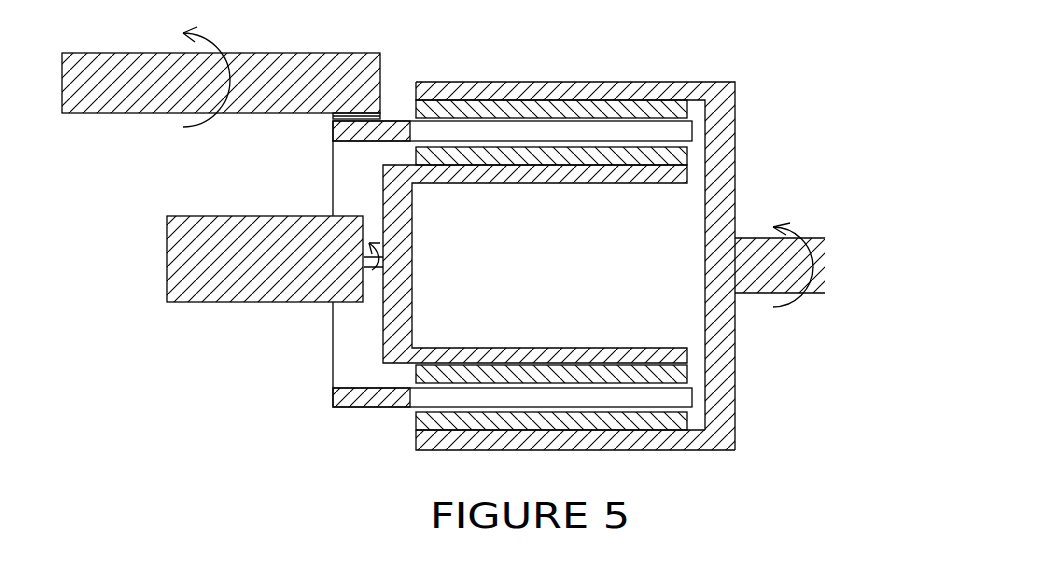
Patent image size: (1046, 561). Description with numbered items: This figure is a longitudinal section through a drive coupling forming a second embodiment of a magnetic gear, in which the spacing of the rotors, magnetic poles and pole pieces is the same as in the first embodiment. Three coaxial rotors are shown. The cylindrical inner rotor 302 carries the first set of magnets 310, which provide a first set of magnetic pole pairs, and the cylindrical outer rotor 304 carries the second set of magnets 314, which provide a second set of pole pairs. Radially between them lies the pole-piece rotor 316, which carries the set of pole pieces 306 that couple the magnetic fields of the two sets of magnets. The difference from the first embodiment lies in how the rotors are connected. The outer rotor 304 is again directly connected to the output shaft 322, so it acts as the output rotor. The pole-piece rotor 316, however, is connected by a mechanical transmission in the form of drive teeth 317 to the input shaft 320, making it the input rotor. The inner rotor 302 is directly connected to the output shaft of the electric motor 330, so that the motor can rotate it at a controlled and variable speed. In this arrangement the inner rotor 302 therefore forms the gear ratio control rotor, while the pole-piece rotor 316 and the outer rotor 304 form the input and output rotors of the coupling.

The inner rotor 302 is at (533, 177).
The outer rotor 304 is at (460, 87).
The pole pieces 306 is at (418, 400).
The first set of magnets 310 is at (642, 155).
The second set of magnets 314 is at (572, 103).
The pole-piece rotor 316 is at (367, 398).
The drive teeth 317 is at (380, 117).
The input shaft 320 is at (90, 108).
The output shaft 322 is at (750, 242).
The electric motor 330 is at (275, 300).